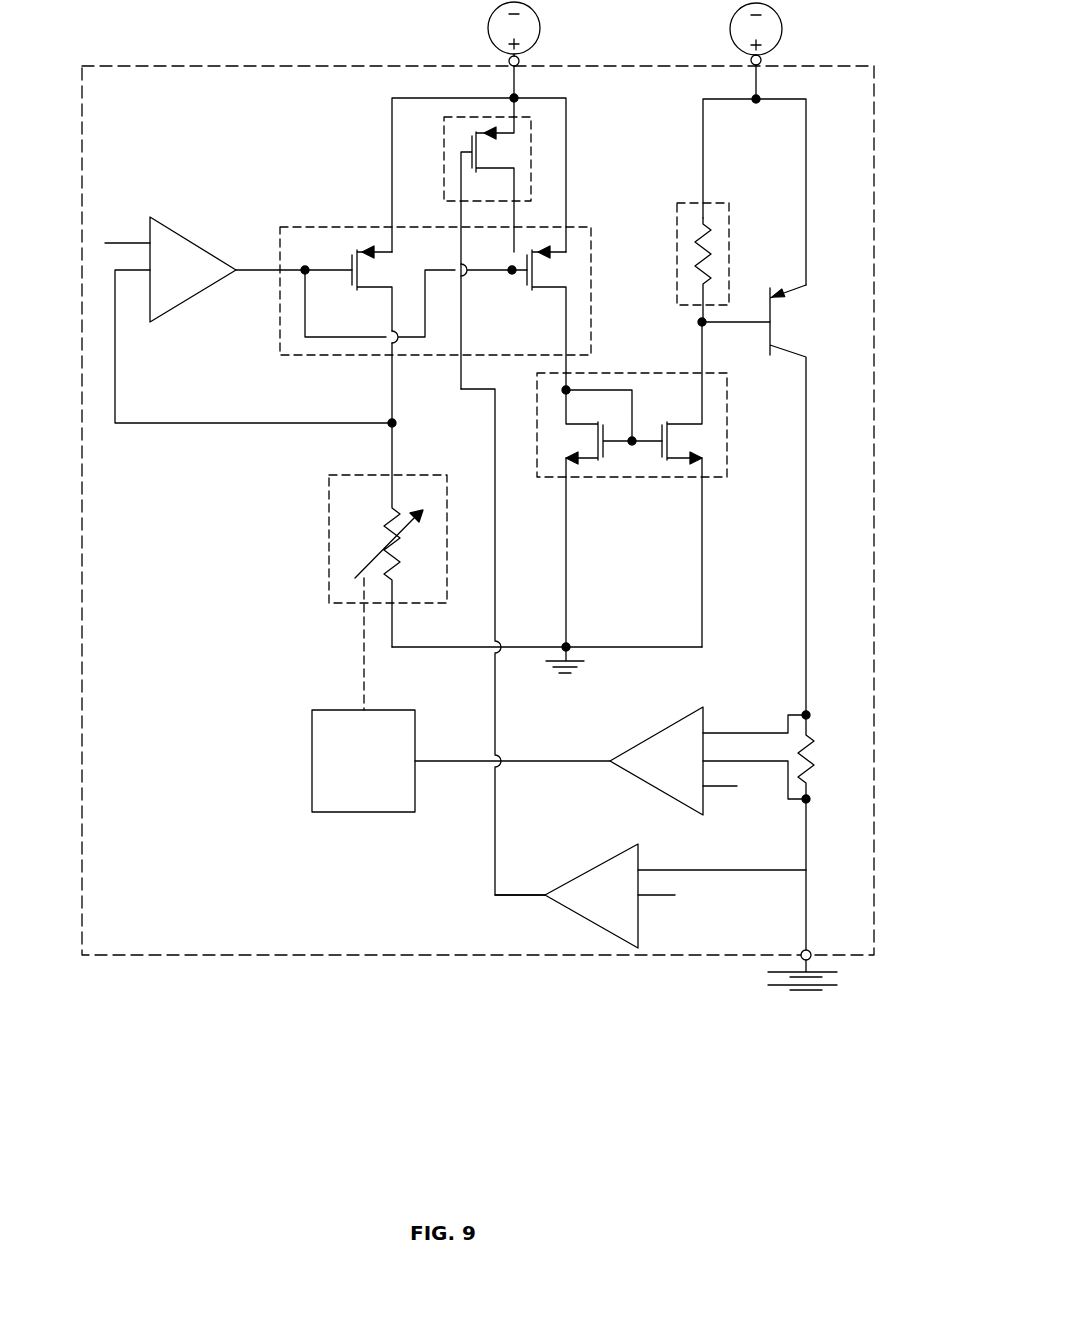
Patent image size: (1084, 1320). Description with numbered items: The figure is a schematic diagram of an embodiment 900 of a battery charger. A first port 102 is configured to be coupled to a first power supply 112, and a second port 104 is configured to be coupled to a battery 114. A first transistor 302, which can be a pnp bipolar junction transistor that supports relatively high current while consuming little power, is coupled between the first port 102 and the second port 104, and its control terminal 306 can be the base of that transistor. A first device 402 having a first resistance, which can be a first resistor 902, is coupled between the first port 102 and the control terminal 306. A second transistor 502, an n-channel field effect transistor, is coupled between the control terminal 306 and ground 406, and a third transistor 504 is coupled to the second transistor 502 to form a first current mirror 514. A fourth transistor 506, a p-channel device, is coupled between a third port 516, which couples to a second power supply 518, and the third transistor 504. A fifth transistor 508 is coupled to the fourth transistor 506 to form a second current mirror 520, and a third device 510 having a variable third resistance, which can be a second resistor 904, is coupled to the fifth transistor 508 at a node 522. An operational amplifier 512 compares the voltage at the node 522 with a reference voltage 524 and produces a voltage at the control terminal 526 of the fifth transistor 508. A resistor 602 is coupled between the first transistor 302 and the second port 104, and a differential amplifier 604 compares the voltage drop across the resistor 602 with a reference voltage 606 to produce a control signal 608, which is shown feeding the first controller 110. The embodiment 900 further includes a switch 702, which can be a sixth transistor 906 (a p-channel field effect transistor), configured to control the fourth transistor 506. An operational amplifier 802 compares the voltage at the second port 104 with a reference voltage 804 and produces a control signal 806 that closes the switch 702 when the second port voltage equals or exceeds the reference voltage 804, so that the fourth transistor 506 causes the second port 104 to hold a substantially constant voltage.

The embodiment of a battery charger 900 is at (478, 510).
The second power supply 518 is at (539, 9).
The third port 516 is at (518, 65).
The first power supply 112 is at (781, 10).
The first port 102 is at (752, 66).
The switch 702 is at (527, 183).
The sixth transistor 906 is at (494, 243).
The second current mirror 520 is at (435, 292).
The operational amplifier 512 is at (251, 269).
The reference voltage 524 is at (127, 230).
The control terminal of fifth transistor 526 is at (341, 268).
The fifth transistor 508 is at (377, 334).
The fourth transistor 506 is at (542, 318).
The node 522 is at (396, 423).
The first current mirror 514 is at (632, 425).
The third transistor 504 is at (608, 516).
The second transistor 502 is at (689, 484).
The first device 402 is at (730, 207).
The first resistor 902 is at (712, 248).
The control terminal 306 is at (730, 325).
The first transistor 302 is at (788, 318).
The third device 510 is at (330, 495).
The second resistor 904 is at (405, 552).
The ground 406 is at (563, 680).
The first controller 110 is at (363, 761).
The differential amplifier 604 is at (708, 761).
The reference voltage 606 is at (746, 788).
The control signal 608 is at (553, 763).
The resistor 602 is at (814, 757).
The control signal 806 is at (494, 832).
The operational amplifier 802 is at (675, 896).
The reference voltage 804 is at (681, 898).
The second port 104 is at (800, 950).
The battery 114 is at (820, 994).